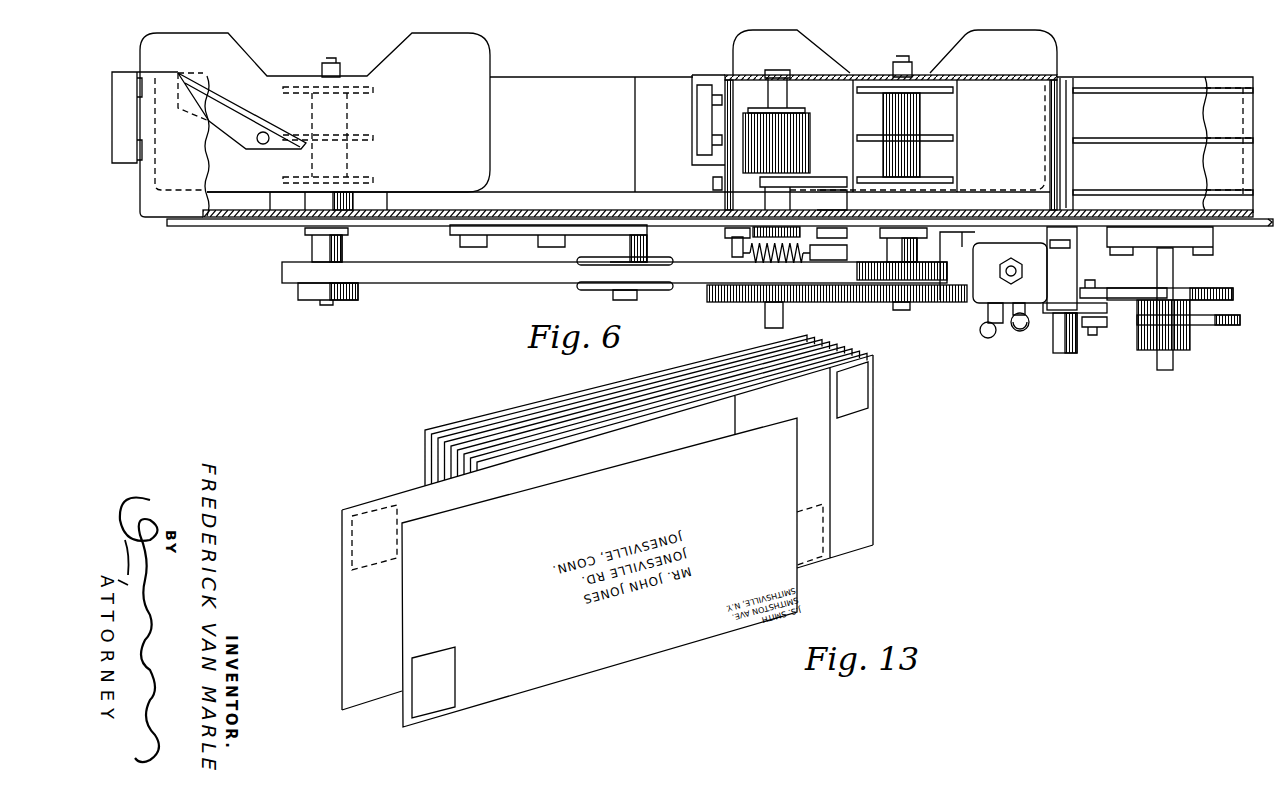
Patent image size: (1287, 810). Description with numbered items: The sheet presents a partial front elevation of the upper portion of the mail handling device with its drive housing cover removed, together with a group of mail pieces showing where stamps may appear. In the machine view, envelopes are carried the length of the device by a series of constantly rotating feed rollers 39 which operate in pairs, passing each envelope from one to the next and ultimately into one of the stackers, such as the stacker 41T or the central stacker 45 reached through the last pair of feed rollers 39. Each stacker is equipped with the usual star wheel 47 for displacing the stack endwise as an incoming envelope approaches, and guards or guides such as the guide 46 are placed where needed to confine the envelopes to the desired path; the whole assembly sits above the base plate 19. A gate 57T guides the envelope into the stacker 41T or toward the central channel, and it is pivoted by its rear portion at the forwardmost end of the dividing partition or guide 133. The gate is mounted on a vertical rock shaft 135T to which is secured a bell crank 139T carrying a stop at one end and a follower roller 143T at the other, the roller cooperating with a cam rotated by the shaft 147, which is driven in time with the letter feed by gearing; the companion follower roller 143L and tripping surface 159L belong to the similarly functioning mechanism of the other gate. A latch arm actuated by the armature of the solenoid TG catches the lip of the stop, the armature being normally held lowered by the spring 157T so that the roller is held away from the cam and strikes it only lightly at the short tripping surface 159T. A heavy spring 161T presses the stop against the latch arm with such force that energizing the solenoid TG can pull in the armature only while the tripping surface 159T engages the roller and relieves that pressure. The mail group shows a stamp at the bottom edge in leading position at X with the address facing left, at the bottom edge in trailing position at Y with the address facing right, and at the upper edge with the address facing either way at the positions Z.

In FIG. 6, the base plate 19 is at (250, 226).
In FIG. 6, the feed rollers 39 is at (808, 127).
In FIG. 6, the stacker 41T is at (1042, 65).
In FIG. 6, the stacker 45 is at (530, 97).
In FIG. 6, the guard or guide 46 is at (468, 160).
In FIG. 6, the star wheel 47 is at (363, 92).
In FIG. 6, the gate 57T is at (1170, 88).
In FIG. 6, the dividing partition or guide 133 is at (997, 66).
In FIG. 6, the vertical rock shaft 135T is at (1052, 320).
In FIG. 6, the bell crank 139T is at (1053, 325).
In FIG. 6, the follower roller 143L is at (1085, 292).
In FIG. 6, the follower roller 143T is at (1088, 327).
In FIG. 6, the shaft 147 is at (1160, 363).
In FIG. 6, the spring 157T is at (988, 340).
In FIG. 6, the tripping surface 159L is at (1207, 293).
In FIG. 6, the tripping surface 159T is at (1205, 332).
In FIG. 6, the heavy spring 161T is at (1017, 335).
In FIG. 6, the solenoid TG is at (993, 295).
In FIG. 13, the stamp position X is at (437, 705).
In FIG. 13, the stamp position Y is at (815, 556).
In FIG. 13, the stamp position Z is at (352, 540).